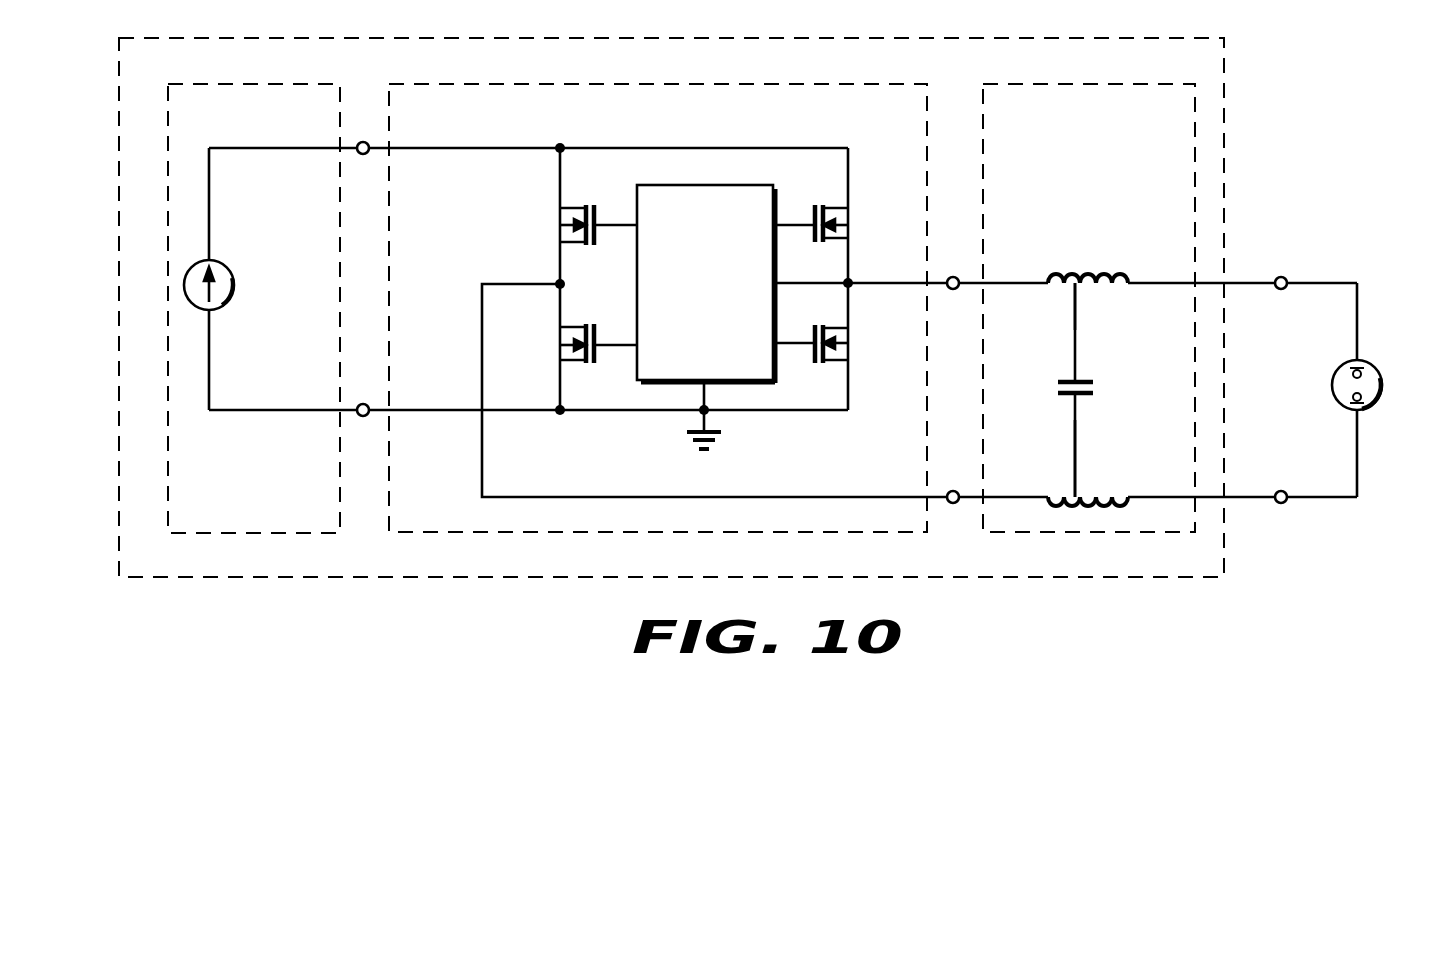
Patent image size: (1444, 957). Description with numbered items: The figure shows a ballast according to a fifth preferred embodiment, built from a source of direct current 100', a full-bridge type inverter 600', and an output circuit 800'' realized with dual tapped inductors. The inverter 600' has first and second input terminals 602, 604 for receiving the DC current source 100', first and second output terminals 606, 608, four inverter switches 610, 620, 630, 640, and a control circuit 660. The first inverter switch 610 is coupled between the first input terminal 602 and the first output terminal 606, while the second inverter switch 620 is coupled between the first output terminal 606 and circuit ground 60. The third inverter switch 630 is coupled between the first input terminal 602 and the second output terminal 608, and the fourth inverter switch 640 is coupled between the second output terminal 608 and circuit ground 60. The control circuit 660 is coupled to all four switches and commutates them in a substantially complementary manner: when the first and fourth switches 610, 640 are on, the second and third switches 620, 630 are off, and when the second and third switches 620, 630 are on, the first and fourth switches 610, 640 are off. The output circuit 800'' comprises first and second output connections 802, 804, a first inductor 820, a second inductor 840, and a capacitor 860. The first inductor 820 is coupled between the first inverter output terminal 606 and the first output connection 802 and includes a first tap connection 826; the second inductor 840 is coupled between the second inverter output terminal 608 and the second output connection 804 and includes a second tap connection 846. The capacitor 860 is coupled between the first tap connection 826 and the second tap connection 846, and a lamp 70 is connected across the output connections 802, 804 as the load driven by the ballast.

The source of direct current 100' is at (254, 288).
The inverter 600' is at (658, 288).
The output circuit 800'' is at (1089, 288).
The first input terminal 602 is at (363, 142).
The second input terminal 604 is at (362, 416).
The first output terminal 606 is at (953, 277).
The second output terminal 608 is at (953, 503).
The first inverter switch 610 is at (850, 226).
The second inverter switch 620 is at (850, 344).
The third inverter switch 630 is at (556, 226).
The fourth inverter switch 640 is at (557, 346).
The control circuit 660 is at (703, 185).
The circuit ground 60 is at (709, 413).
The first inductor 820 is at (1096, 268).
The first tap connection 826 is at (1076, 313).
The capacitor 860 is at (1086, 382).
The second tap connection 846 is at (1076, 443).
The second inductor 840 is at (1124, 511).
The first output connection 802 is at (1283, 277).
The second output connection 804 is at (1282, 503).
The lamp 70 is at (1380, 398).